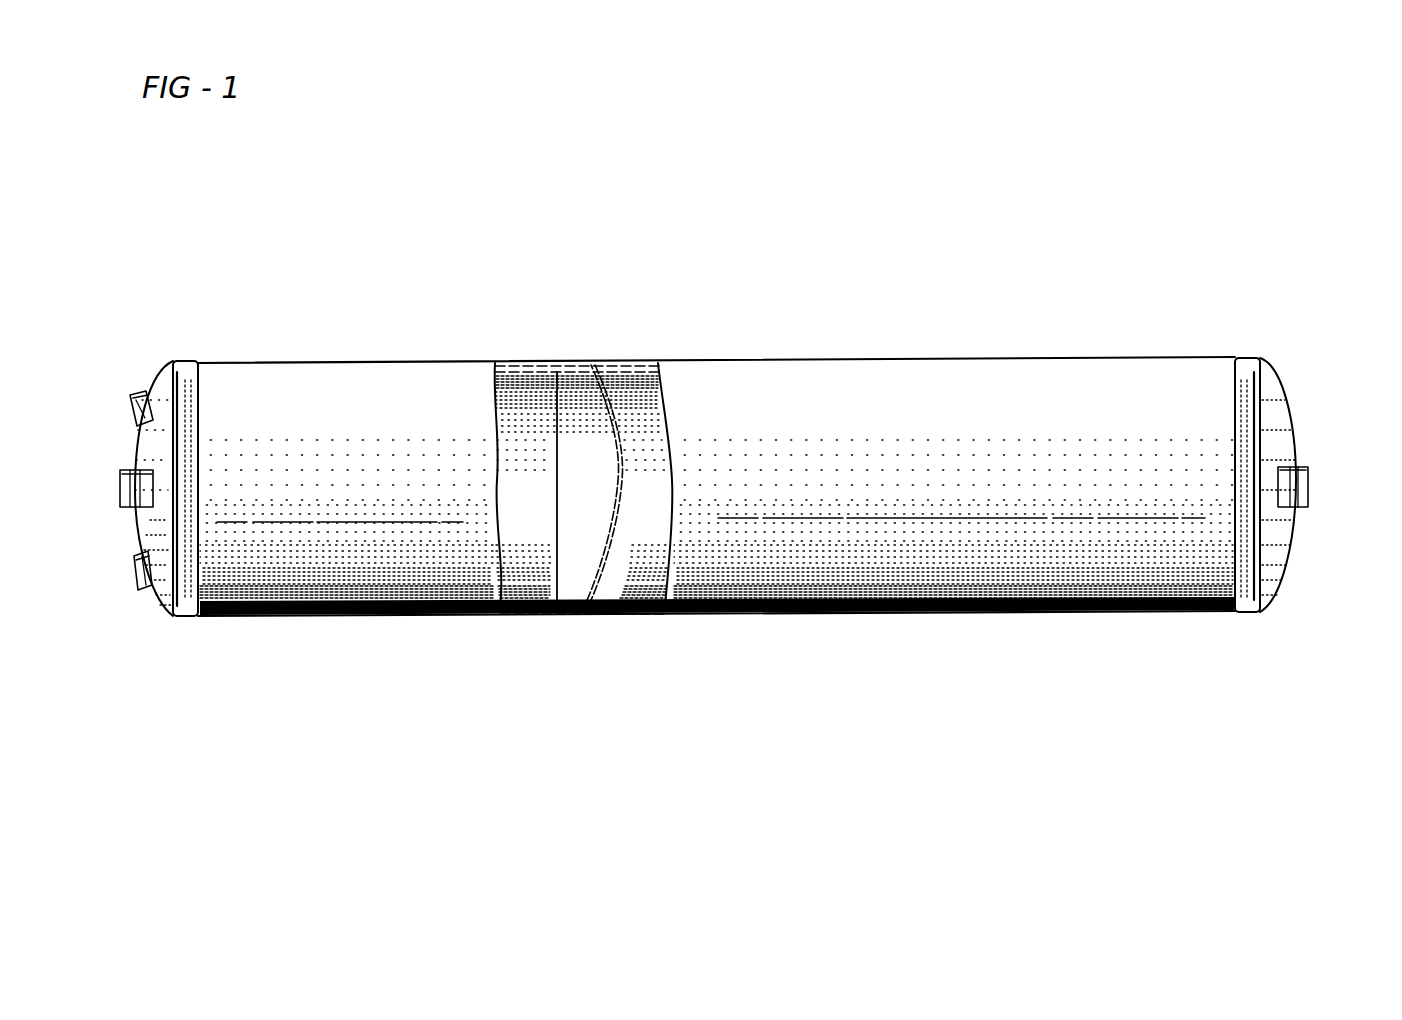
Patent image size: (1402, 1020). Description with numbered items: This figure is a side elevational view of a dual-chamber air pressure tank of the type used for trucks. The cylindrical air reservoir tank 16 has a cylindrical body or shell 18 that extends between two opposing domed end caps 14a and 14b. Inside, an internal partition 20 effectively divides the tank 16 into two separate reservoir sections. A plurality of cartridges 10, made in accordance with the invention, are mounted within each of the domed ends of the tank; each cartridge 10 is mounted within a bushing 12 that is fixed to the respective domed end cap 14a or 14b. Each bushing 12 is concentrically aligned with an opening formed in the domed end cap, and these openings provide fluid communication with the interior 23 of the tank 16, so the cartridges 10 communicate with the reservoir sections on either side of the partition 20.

The cartridge 10 is at (147, 402).
The bushing 12 is at (147, 393).
The domed end cap 14a is at (163, 600).
The domed end cap 14b is at (1265, 607).
The cylindrical air reservoir tank 16 is at (700, 362).
The cylindrical body or shell 18 is at (477, 617).
The internal partition 20 is at (575, 362).
The interior 23 is at (623, 595).